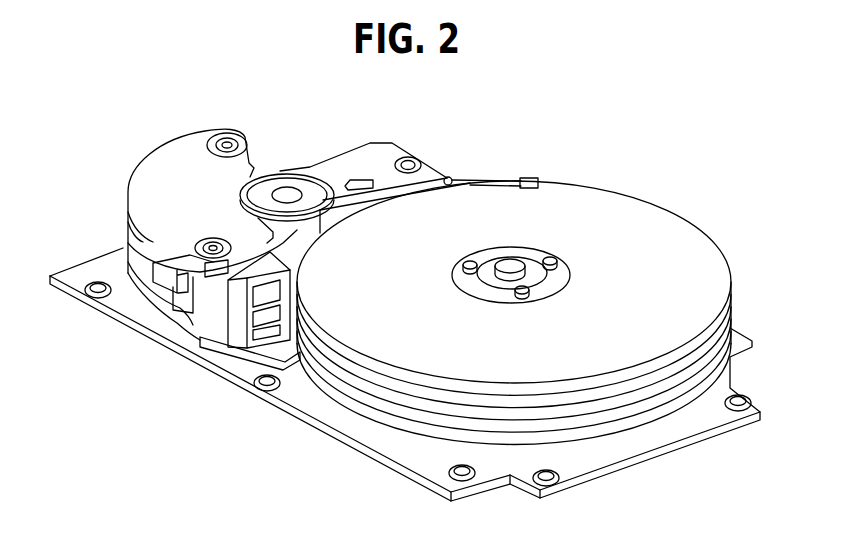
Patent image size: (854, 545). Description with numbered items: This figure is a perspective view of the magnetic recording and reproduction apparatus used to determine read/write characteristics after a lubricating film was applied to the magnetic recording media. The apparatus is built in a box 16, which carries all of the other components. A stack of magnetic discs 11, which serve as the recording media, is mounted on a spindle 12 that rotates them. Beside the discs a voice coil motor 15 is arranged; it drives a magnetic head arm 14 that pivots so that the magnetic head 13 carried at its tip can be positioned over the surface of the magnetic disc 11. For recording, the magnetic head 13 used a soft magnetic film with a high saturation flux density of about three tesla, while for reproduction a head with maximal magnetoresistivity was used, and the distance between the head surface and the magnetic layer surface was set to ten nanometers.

The magnetic disc 11 is at (677, 237).
The spindle 12 is at (513, 261).
The magnetic head 13 is at (528, 178).
The magnetic head arm 14 is at (358, 178).
The voice coil motor (VCM) 15 is at (157, 171).
The box 16 is at (395, 455).